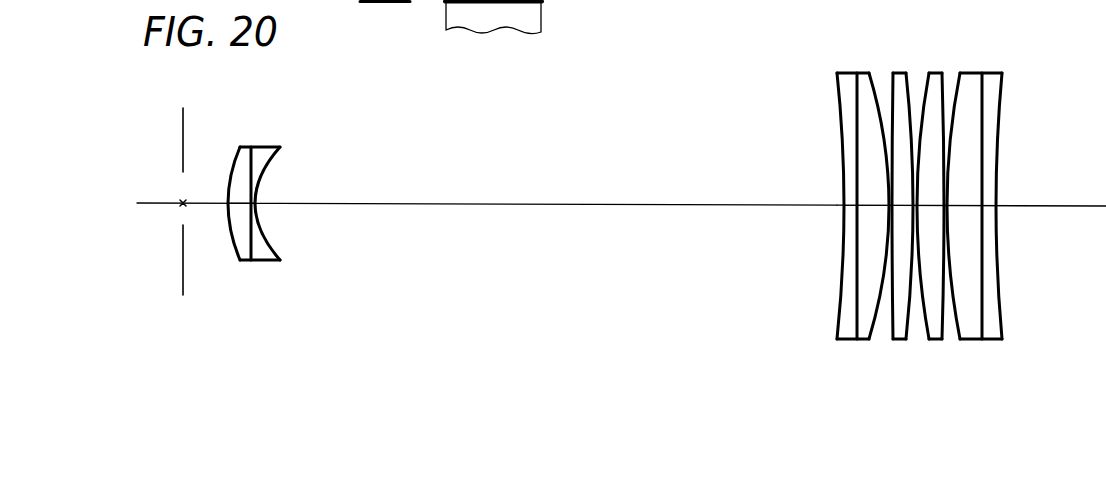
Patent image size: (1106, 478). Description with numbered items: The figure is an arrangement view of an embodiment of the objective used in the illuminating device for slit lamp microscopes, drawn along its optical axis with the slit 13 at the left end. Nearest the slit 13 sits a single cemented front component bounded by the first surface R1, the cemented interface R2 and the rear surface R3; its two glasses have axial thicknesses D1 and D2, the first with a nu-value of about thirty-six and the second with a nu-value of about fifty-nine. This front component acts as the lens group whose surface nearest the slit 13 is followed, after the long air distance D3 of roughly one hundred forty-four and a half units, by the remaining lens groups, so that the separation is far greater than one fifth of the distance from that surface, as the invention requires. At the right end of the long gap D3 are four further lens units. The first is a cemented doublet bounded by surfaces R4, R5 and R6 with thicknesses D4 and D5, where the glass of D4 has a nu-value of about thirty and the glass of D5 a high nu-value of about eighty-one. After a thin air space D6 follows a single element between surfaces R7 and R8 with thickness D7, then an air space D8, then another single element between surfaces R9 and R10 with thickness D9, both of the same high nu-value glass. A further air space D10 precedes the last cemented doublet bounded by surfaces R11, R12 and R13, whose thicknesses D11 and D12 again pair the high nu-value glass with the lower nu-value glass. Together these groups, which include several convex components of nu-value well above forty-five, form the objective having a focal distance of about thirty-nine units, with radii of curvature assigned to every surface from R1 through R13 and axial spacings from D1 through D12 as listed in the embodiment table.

The slit 13 is at (182, 140).
The first lens surface R1 is at (229, 240).
The second lens surface R2 is at (253, 250).
The third lens surface R3 is at (272, 245).
The fourth lens surface R4 is at (838, 318).
The fifth lens surface R5 is at (855, 326).
The sixth lens surface R6 is at (872, 331).
The seventh lens surface R7 is at (895, 337).
The eighth lens surface R8 is at (908, 337).
The ninth lens surface R9 is at (928, 336).
The tenth lens surface R10 is at (941, 332).
The eleventh lens surface R11 is at (962, 336).
The twelfth lens surface R12 is at (983, 333).
The thirteenth lens surface R13 is at (999, 300).
The first axial thickness D1 is at (242, 202).
The second axial thickness D2 is at (256, 200).
The third axial distance D3 is at (472, 204).
The fourth axial thickness D4 is at (847, 205).
The fifth axial thickness D5 is at (865, 208).
The sixth axial distance D6 is at (890, 205).
The seventh axial thickness D7 is at (903, 205).
The eighth axial distance D8 is at (913, 209).
The ninth axial thickness D9 is at (946, 207).
The tenth axial distance D10 is at (947, 205).
The eleventh axial thickness D11 is at (967, 205).
The twelfth axial thickness D12 is at (990, 208).